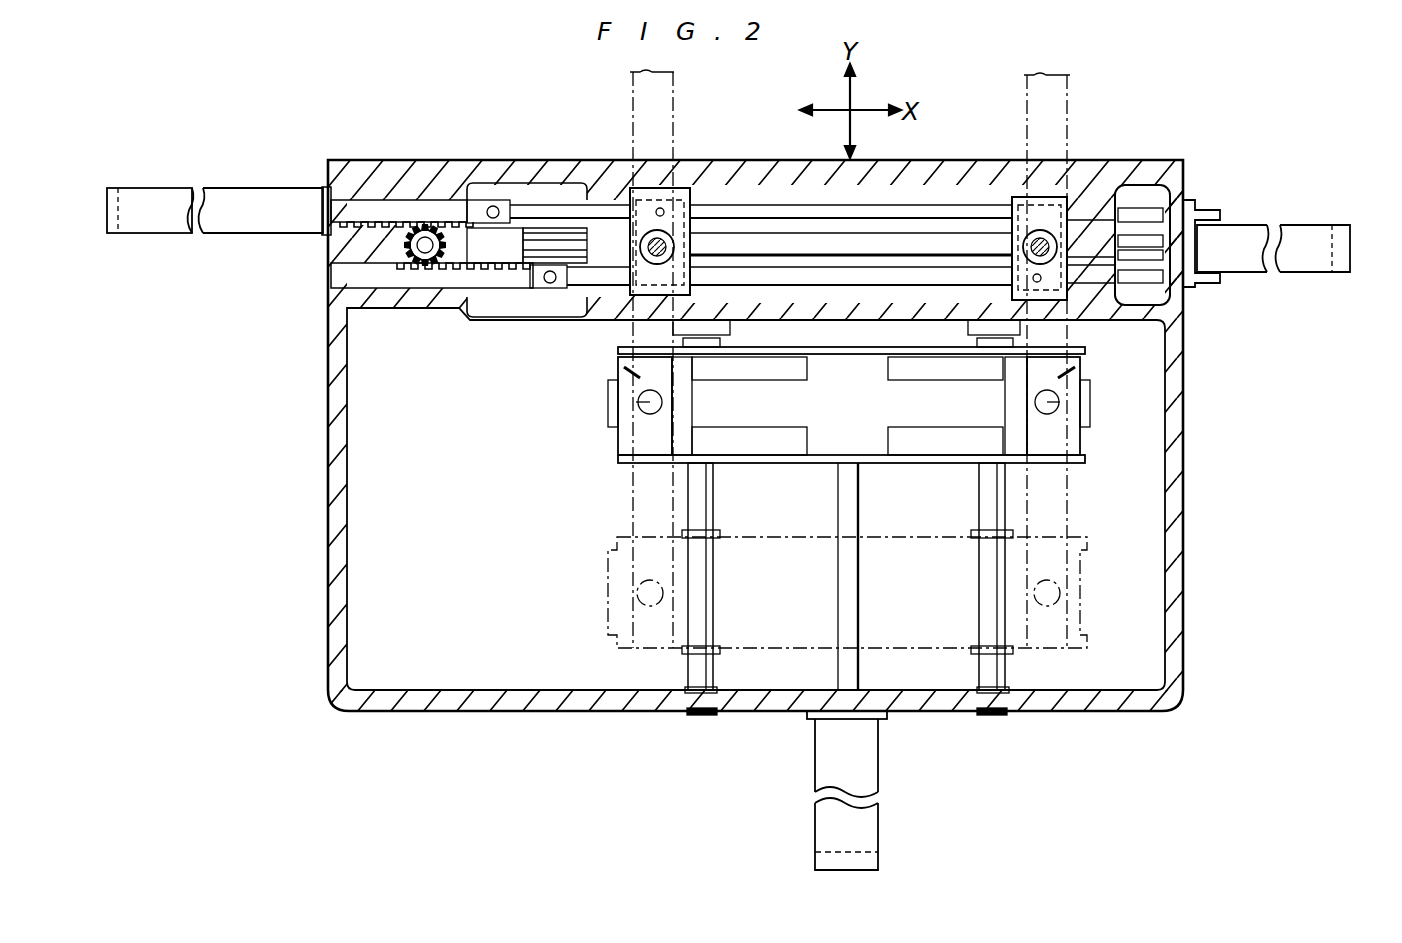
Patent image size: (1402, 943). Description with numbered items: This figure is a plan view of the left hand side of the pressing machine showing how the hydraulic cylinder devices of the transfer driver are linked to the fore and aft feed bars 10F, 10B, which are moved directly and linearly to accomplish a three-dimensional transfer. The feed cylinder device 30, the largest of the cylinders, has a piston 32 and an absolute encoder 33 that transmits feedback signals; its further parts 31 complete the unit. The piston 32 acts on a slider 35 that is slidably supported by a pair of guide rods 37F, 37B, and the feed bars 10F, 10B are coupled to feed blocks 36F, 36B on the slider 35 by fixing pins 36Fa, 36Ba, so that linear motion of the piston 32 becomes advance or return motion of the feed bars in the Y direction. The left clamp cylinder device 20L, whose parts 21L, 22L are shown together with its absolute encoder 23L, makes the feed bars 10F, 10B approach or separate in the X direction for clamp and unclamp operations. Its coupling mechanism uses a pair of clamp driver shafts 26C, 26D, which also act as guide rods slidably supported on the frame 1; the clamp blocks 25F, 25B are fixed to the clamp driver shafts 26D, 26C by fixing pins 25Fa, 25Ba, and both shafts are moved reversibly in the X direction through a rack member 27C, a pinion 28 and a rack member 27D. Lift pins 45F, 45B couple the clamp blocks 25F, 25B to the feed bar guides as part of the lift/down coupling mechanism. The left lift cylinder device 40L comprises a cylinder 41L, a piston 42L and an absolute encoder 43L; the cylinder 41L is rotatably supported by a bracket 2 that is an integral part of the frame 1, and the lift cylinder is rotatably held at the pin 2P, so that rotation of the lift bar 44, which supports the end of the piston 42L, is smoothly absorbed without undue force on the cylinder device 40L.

The frame 1 is at (617, 164).
The bracket 2 is at (1235, 284).
The pin 2P is at (1212, 286).
The feed bar 10B is at (678, 126).
The feed bar 10F is at (1069, 118).
The left clamp cylinder device 20L is at (216, 154).
The input shaft 21L is at (222, 192).
The input shaft flange 22L is at (302, 182).
The absolute encoder 23L is at (118, 192).
The clamp block 25B is at (726, 207).
The fixing pin 25Ba is at (666, 212).
The clamp block 25F is at (997, 189).
The fixing pin 25Fa is at (1012, 222).
The clamp driver shaft 26C is at (572, 197).
The clamp driver shaft 26D is at (560, 315).
The rack member 27C is at (410, 224).
The rack member 27D is at (436, 290).
The pinion 28 is at (332, 256).
The feed cylinder device 30 is at (901, 788).
The output shaft 31 is at (854, 782).
The piston 32 is at (851, 706).
The absolute encoder 33 is at (877, 834).
The slider 35 is at (872, 490).
The feed block 36B is at (598, 421).
The fixing pin 36Ba is at (610, 404).
The feed block 36F is at (1085, 411).
The fixing pin 36Fa is at (1060, 402).
The guide rod 37B is at (713, 494).
The guide rod 37F is at (1006, 500).
The left lift cylinder device 40L is at (1291, 199).
The cylinder 41L is at (1298, 238).
The piston 42L is at (1200, 248).
The absolute encoder 43L is at (1358, 223).
The lift bar 44 is at (851, 471).
The lift pin 45B is at (622, 322).
The lift pin 45F is at (1092, 164).